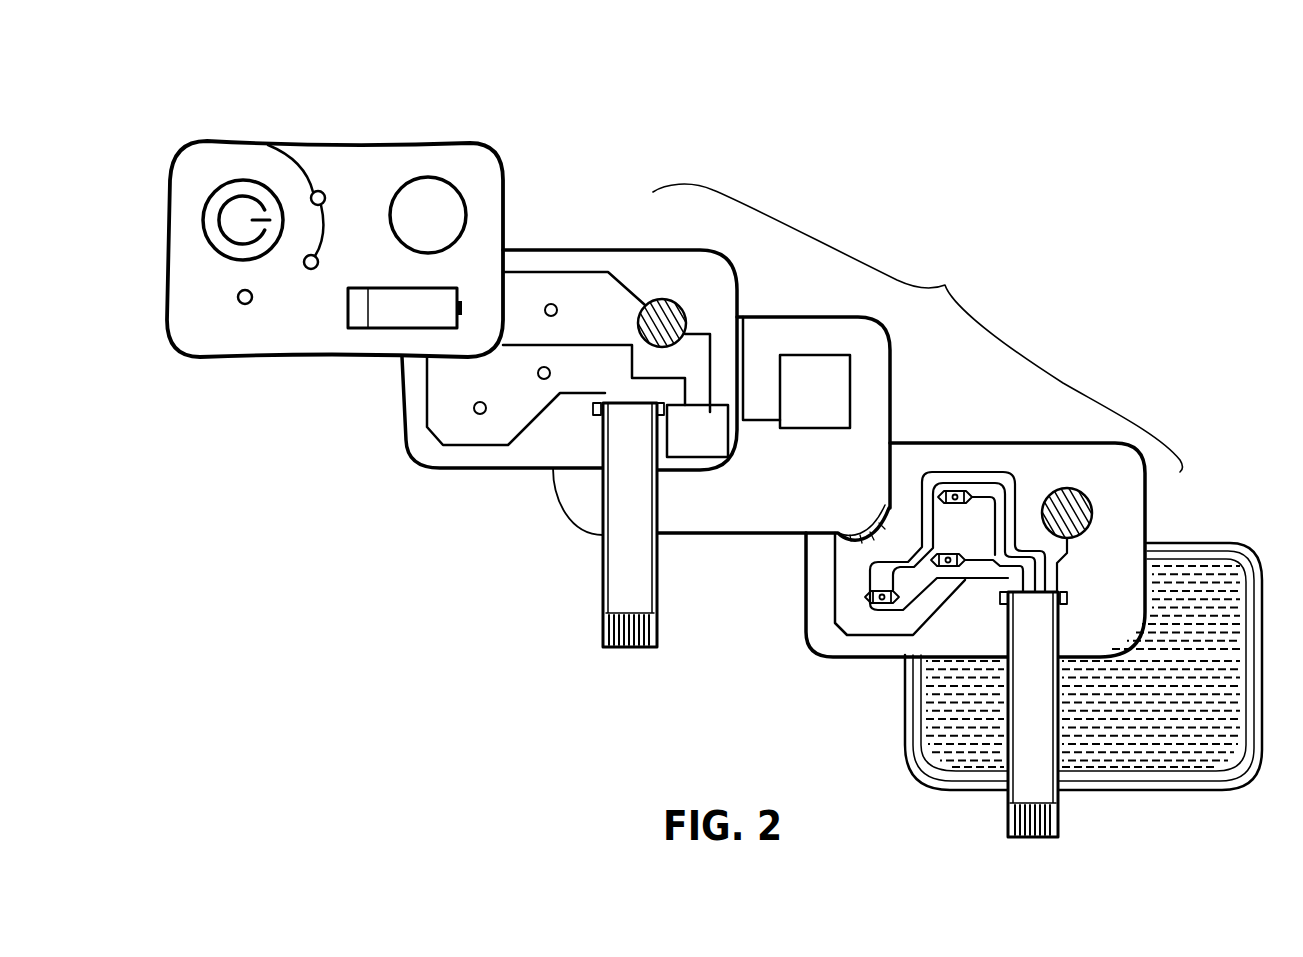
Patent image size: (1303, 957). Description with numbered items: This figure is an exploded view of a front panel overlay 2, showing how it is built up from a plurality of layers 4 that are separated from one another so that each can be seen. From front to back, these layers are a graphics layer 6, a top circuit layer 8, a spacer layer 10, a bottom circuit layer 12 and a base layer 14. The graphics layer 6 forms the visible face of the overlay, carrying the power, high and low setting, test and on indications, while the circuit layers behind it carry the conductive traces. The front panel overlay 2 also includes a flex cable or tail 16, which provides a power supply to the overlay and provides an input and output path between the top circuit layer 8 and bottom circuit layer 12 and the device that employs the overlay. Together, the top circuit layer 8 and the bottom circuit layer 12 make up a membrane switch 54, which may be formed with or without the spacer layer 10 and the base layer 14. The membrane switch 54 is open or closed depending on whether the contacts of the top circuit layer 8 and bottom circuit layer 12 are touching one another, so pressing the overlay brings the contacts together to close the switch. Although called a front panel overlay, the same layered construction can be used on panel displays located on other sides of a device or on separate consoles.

The front panel overlay 2 is at (193, 113).
The plurality of layers 4 is at (443, 480).
The graphics layer 6 is at (352, 172).
The top circuit layer 8 is at (403, 386).
The spacer layer 10 is at (582, 505).
The bottom circuit layer 12 is at (845, 635).
The base layer 14 is at (1185, 743).
The flex cable 16 is at (1032, 795).
The membrane switch 54 is at (918, 363).